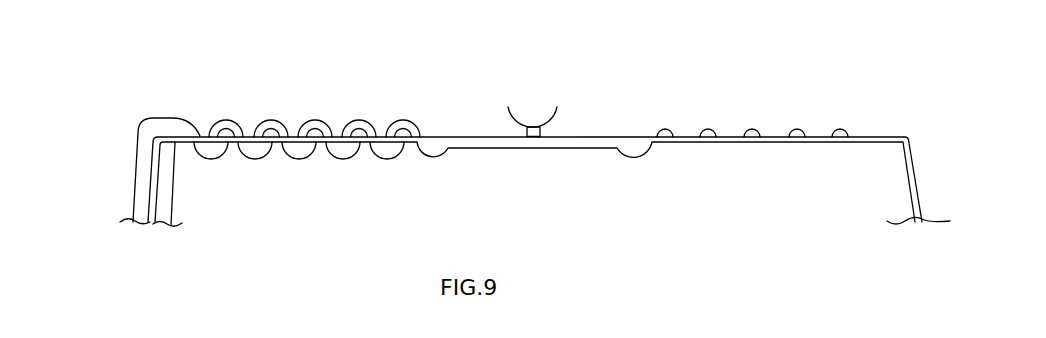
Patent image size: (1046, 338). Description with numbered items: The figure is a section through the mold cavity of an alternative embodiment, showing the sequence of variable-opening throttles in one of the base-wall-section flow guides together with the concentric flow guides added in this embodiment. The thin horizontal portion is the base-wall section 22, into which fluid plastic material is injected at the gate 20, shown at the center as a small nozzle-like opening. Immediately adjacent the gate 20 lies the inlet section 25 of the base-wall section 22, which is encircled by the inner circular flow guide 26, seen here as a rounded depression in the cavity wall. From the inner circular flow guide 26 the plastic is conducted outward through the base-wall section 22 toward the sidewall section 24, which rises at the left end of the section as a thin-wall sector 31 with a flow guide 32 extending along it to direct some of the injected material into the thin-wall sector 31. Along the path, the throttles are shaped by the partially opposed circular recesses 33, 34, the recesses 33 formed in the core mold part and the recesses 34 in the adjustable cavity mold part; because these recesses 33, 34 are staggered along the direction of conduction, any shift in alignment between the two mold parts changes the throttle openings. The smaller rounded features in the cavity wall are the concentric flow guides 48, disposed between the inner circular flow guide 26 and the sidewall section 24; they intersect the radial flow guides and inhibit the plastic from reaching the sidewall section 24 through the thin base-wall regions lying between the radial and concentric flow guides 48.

The gate 20 is at (533, 137).
The base-wall section 22 is at (572, 135).
The sidewall section 24 is at (132, 185).
The inlet section 25 is at (472, 142).
The inner circular flow guide 26 is at (432, 155).
The thin-wall sectors 31 is at (153, 204).
The flow guides 32 is at (147, 169).
The recesses 33 is at (297, 161).
The recesses 34 is at (397, 120).
The concentric flow guides 48 is at (308, 135).